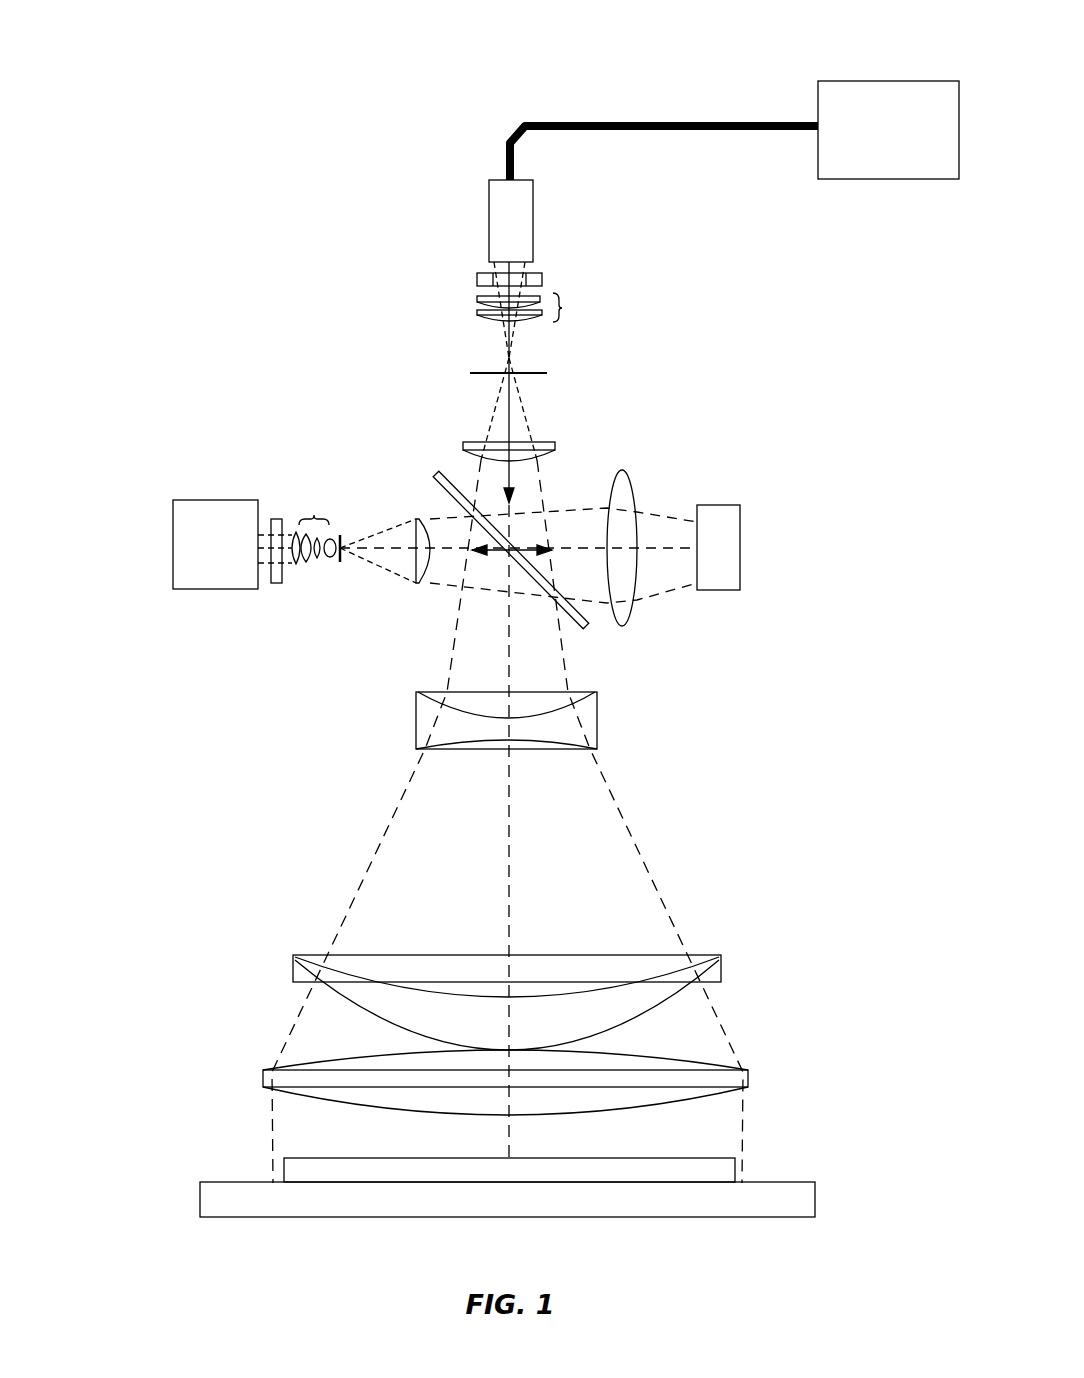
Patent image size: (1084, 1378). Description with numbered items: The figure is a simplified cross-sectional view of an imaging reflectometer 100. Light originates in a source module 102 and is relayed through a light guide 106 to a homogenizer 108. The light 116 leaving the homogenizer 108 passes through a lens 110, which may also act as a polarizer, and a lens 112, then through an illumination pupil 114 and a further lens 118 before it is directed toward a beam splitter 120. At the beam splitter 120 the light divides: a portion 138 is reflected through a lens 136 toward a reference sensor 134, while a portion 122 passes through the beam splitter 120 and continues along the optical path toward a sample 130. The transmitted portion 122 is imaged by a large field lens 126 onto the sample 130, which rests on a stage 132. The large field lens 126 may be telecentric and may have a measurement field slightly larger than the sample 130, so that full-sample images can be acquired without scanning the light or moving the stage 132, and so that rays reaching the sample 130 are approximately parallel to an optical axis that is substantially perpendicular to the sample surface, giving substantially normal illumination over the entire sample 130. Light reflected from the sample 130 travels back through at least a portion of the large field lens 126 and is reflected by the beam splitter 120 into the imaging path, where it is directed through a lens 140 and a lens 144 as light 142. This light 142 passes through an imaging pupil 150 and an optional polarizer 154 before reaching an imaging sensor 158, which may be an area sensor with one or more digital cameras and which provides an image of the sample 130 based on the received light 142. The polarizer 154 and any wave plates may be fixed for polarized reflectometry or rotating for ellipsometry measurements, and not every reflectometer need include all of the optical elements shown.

The imaging reflectometer 100 is at (315, 165).
The source module 102 is at (905, 81).
The light guide 106 is at (715, 122).
The homogenizer 108 is at (533, 218).
The lens 110 is at (477, 278).
The lens 112 is at (563, 302).
The illumination pupil 114 is at (547, 373).
The light 116 is at (507, 355).
The lens 118 is at (555, 450).
The beam splitter 120 is at (436, 468).
The portion of the light 122 is at (630, 820).
The large field lens 126 is at (722, 960).
The sample 130 is at (570, 1158).
The stage 132 is at (778, 1182).
The reference sensor 134 is at (720, 505).
The lens 136 is at (620, 628).
The portion of the light 138 is at (682, 588).
The lens 140 is at (423, 510).
The light 142 is at (378, 532).
The lens 144 is at (313, 518).
The imaging pupil 150 is at (345, 568).
The polarizer 154 is at (278, 585).
The imaging sensor 158 is at (195, 500).